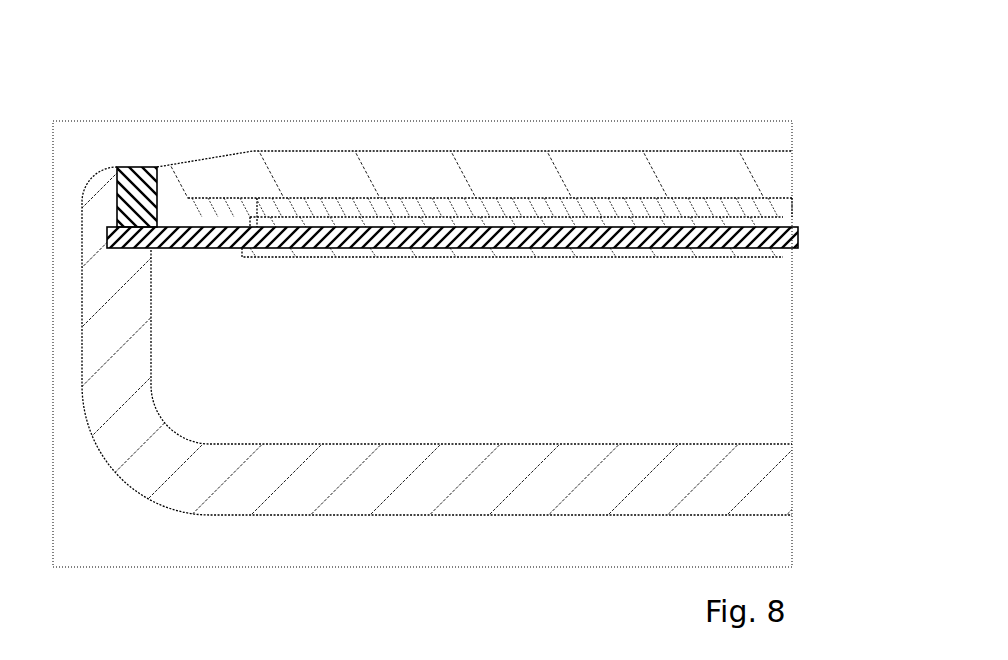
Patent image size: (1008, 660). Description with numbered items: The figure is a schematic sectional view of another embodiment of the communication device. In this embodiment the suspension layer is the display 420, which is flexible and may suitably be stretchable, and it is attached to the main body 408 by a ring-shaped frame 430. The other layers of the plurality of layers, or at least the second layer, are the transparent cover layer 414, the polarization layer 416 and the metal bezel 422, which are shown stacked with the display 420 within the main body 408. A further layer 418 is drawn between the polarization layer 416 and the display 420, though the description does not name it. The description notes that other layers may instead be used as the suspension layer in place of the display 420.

The main body 408 is at (257, 472).
The transparent cover layer 414 is at (398, 167).
The polarization layer 416 is at (773, 200).
The third layer 418 is at (782, 220).
The display 420 is at (188, 225).
The metal bezel 422 is at (776, 252).
The ring-shaped frame 430 is at (137, 165).